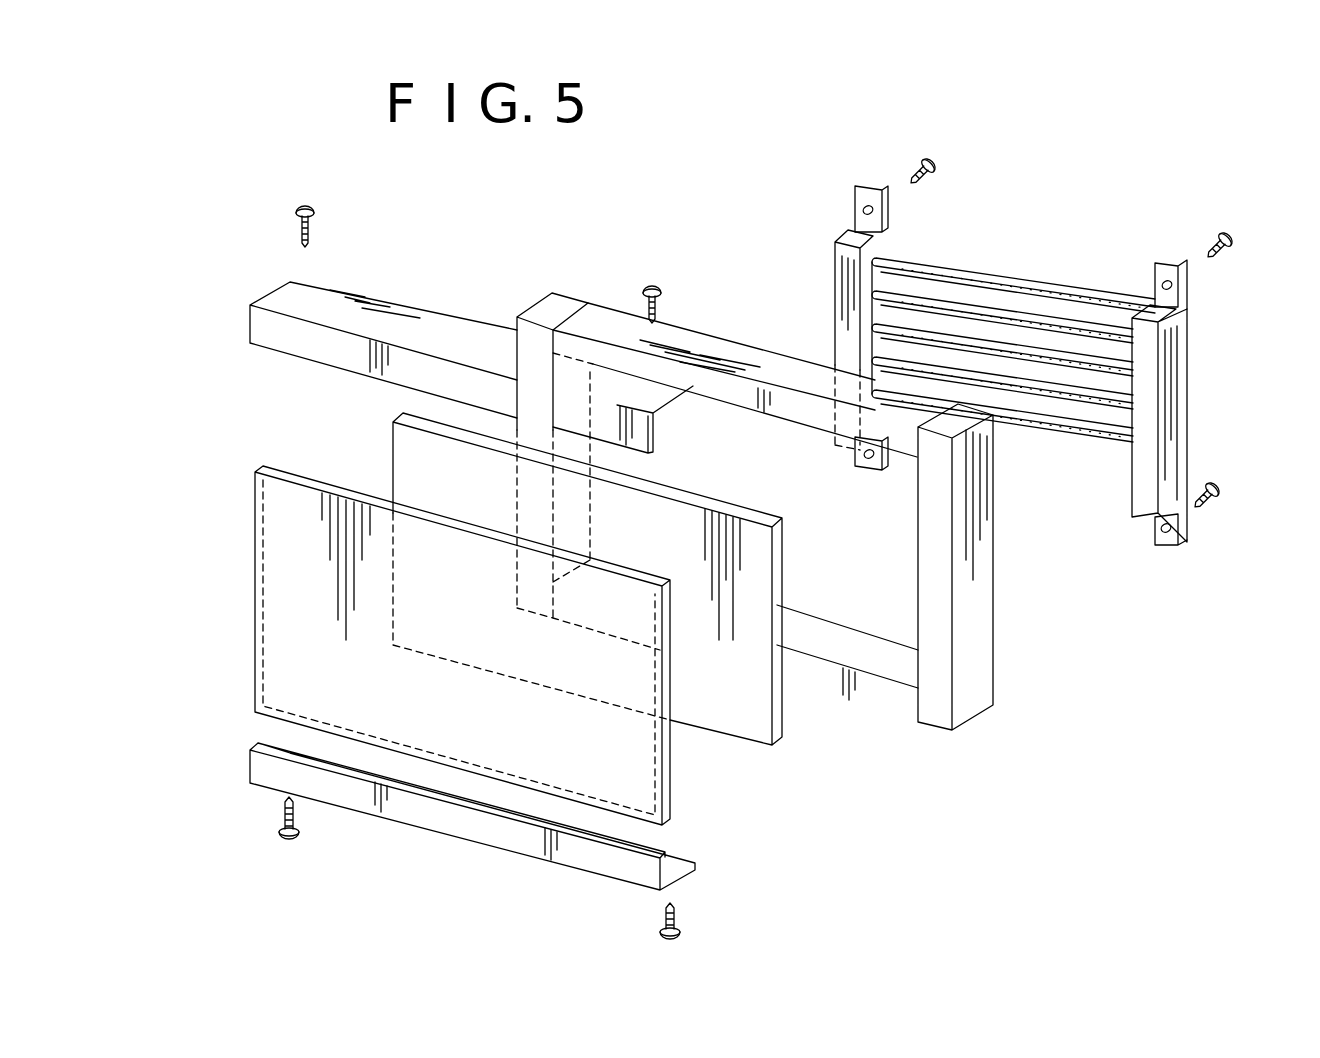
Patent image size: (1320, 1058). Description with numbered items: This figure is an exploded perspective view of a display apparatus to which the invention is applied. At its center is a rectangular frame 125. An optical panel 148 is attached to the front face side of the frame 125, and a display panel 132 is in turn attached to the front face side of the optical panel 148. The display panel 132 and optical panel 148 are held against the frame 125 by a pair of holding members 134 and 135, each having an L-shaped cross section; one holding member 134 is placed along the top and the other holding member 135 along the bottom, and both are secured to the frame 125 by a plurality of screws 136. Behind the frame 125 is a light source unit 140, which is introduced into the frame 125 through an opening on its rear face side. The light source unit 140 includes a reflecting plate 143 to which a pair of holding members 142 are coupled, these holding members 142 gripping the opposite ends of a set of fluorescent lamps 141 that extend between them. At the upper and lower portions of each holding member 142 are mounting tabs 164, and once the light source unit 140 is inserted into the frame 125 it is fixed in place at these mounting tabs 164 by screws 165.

The frame 125 is at (978, 614).
The display panel 132 is at (270, 567).
The holding member 134 is at (432, 327).
The holding member 135 is at (415, 818).
The screw 136 is at (315, 224).
The light source unit 140 is at (1029, 372).
The fluorescent lamp 141 is at (1030, 330).
The holding member 142 is at (835, 300).
The reflecting plate 143 is at (935, 285).
The optical panel 148 is at (698, 742).
The mounting tab 164 is at (860, 205).
The screw 165 is at (913, 164).